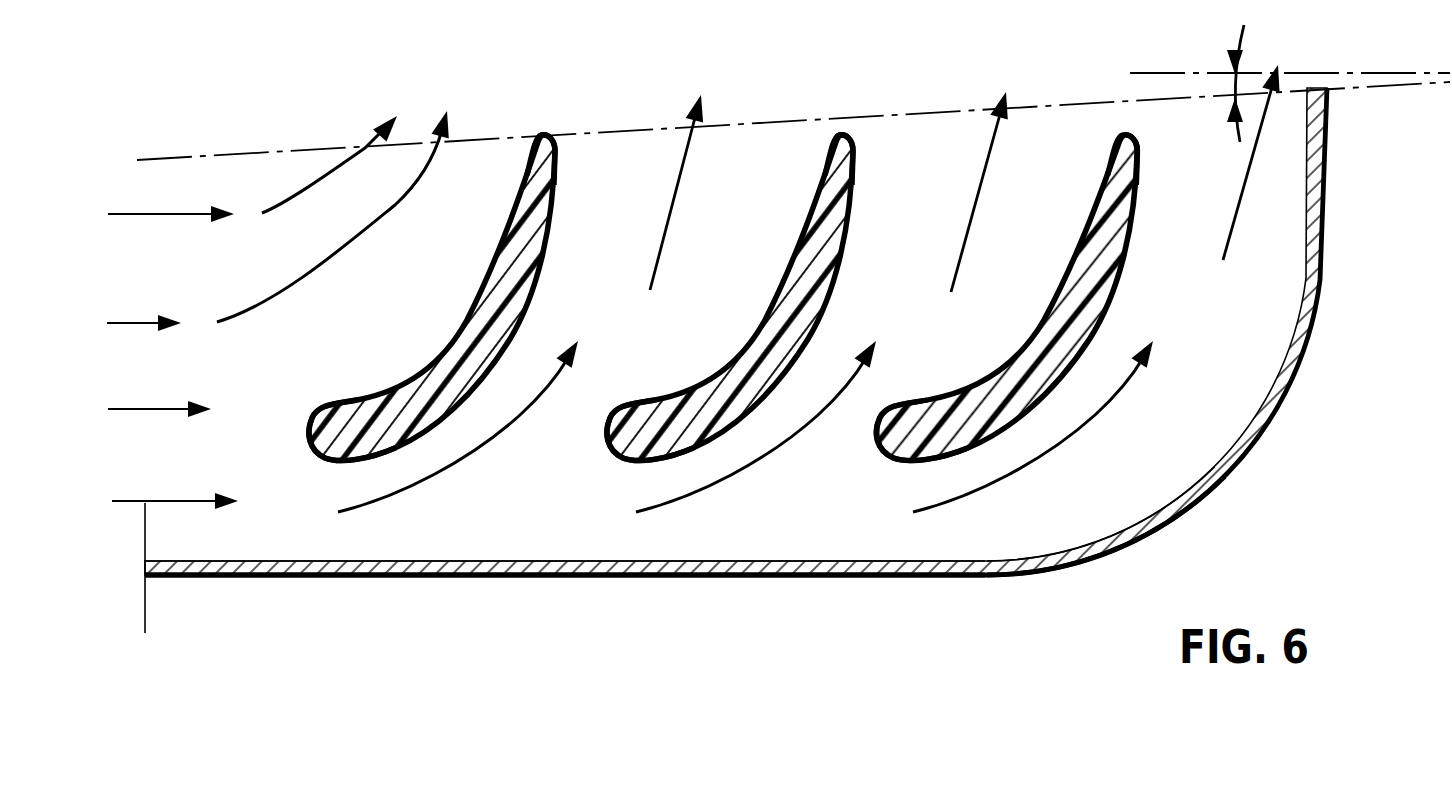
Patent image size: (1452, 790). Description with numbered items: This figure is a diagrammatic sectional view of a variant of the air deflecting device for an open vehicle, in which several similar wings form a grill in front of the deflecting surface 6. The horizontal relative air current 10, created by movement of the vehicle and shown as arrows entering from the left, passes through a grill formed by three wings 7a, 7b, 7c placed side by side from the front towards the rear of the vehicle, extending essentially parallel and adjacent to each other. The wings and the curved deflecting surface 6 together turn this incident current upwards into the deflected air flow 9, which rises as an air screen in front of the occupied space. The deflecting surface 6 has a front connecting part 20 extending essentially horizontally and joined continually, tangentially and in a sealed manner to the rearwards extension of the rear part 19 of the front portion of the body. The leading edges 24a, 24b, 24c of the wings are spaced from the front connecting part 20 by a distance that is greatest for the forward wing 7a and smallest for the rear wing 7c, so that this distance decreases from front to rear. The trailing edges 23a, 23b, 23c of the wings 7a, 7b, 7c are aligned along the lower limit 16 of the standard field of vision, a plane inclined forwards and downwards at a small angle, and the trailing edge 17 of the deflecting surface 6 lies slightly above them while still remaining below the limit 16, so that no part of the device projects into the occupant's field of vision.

The deflecting surface 6 is at (1260, 398).
The wing 7a is at (477, 327).
The wing 7b is at (790, 316).
The wing 7c is at (1083, 262).
The deflected air flow 9 is at (643, 117).
The relative air current 10 is at (170, 283).
The lower limit of the field of vision 16 is at (262, 152).
The trailing edge of the deflecting surface 17 is at (1302, 110).
The rear part of the front portion of the body 19 is at (302, 578).
The front connecting part 20 is at (997, 573).
The trailing edge 23a is at (537, 152).
The trailing edge 23b is at (832, 148).
The trailing edge 23c is at (1108, 145).
The leading edge 24a is at (313, 448).
The leading edge 24b is at (625, 450).
The leading edge 24c is at (893, 460).